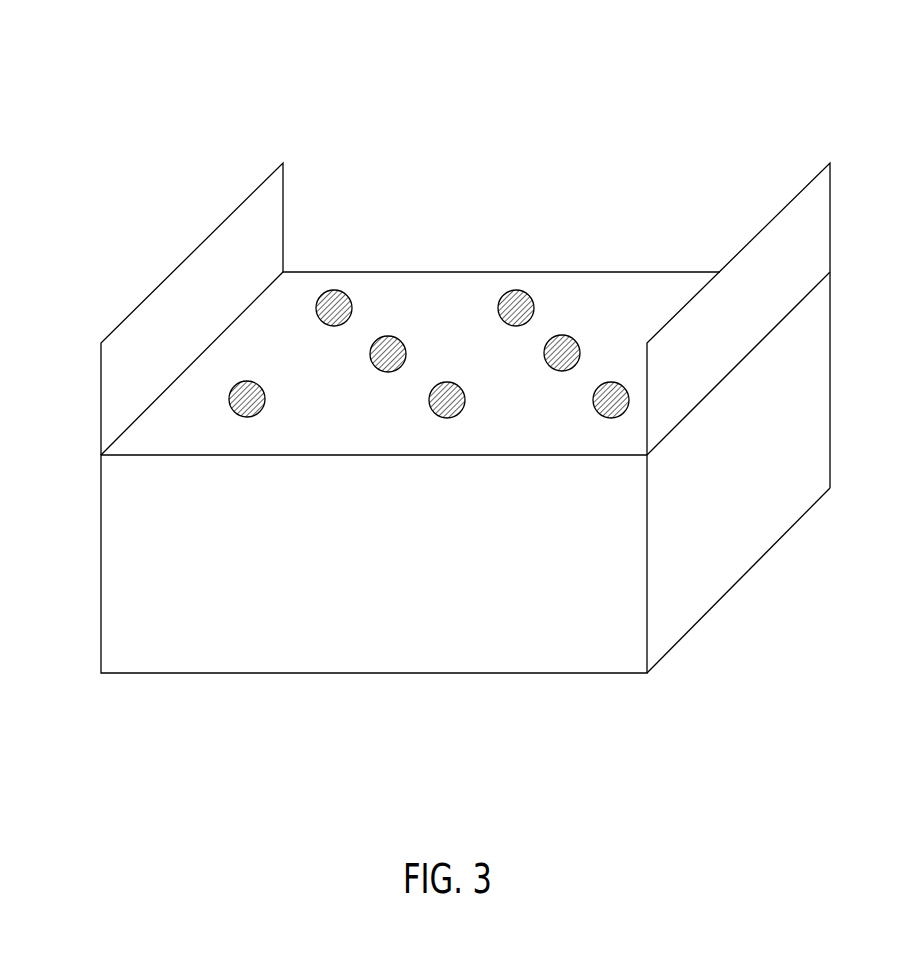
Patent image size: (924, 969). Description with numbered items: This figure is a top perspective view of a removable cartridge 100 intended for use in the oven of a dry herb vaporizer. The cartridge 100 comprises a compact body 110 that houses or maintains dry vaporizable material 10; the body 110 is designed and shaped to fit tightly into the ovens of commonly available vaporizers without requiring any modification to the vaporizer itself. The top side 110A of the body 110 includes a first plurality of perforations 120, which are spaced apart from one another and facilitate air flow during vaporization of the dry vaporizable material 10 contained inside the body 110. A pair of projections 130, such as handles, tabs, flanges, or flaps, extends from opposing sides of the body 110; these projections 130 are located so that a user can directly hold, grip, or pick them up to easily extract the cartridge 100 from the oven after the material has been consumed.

The removable cartridge 100 is at (200, 98).
The body 110 is at (555, 655).
The top side 110A is at (632, 288).
The first plurality of perforations 120 is at (520, 290).
The pair of projections 130 is at (285, 215).
The dry vaporizable material 10 is at (341, 294).